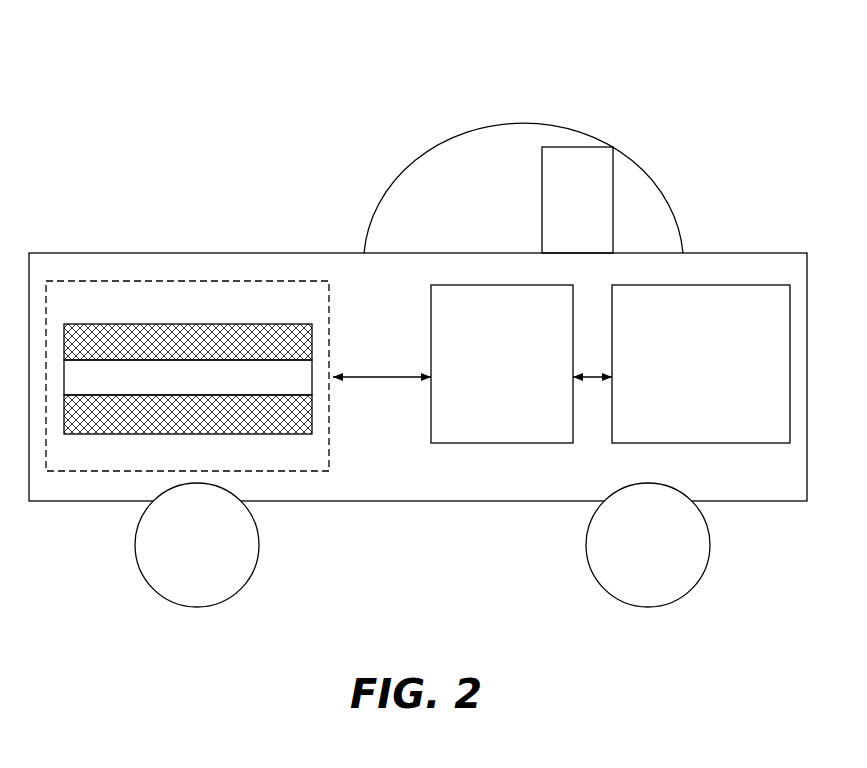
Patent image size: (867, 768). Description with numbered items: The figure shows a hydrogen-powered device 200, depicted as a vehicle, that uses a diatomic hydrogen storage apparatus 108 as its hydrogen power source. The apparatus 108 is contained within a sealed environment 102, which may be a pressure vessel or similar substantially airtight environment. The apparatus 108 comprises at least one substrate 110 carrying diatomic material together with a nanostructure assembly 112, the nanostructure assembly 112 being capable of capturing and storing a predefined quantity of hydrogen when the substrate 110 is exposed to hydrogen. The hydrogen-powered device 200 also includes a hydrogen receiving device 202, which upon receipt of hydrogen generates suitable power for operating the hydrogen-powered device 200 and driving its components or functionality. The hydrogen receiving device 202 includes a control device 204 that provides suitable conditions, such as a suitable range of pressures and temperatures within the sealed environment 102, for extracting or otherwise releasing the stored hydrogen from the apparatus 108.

The hydrogen-powered device 200 is at (720, 82).
The sealed environment 102 is at (303, 317).
The substrate 110 is at (206, 389).
The nanostructure assembly 112 is at (145, 325).
The diatomic hydrogen storage apparatus 108 is at (345, 402).
The control device 204 is at (483, 347).
The hydrogen receiving device 202 is at (682, 332).